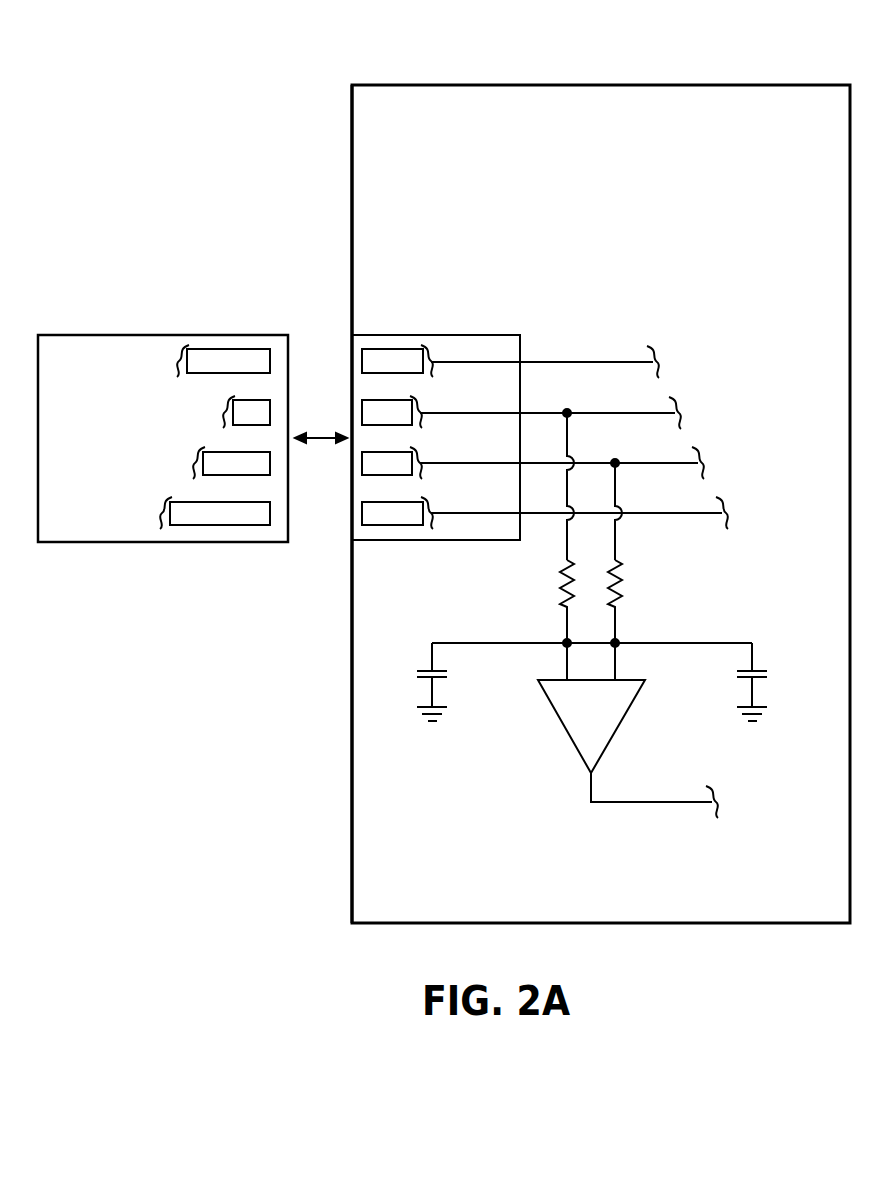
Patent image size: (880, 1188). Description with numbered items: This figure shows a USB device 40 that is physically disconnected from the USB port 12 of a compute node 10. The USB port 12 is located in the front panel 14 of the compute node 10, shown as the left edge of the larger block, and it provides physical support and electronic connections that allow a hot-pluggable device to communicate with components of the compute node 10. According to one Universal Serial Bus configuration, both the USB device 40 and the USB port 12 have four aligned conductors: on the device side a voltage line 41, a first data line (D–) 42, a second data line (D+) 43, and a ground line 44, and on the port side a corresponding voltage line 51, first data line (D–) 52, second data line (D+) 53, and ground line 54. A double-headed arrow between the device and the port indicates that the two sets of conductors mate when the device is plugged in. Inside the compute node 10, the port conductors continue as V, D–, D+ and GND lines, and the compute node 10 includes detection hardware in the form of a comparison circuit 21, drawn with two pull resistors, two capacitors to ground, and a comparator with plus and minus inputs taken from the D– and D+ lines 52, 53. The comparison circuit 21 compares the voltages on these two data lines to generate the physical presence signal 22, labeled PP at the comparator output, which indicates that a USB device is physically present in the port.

The compute node 10 is at (628, 85).
The front panel 14 is at (352, 213).
The USB port 12 is at (502, 335).
The USB device 40 is at (85, 335).
The voltage line 41 is at (257, 355).
The first data line (D–) 42 is at (248, 408).
The second data line (D+) 43 is at (213, 460).
The ground line 44 is at (227, 515).
The voltage line 51 is at (420, 355).
The first data line (D–) 52 is at (390, 408).
The second data line (D+) 53 is at (390, 460).
The ground line 54 is at (413, 515).
The comparison circuit 21 is at (746, 599).
The physical presence signal 22 is at (652, 802).